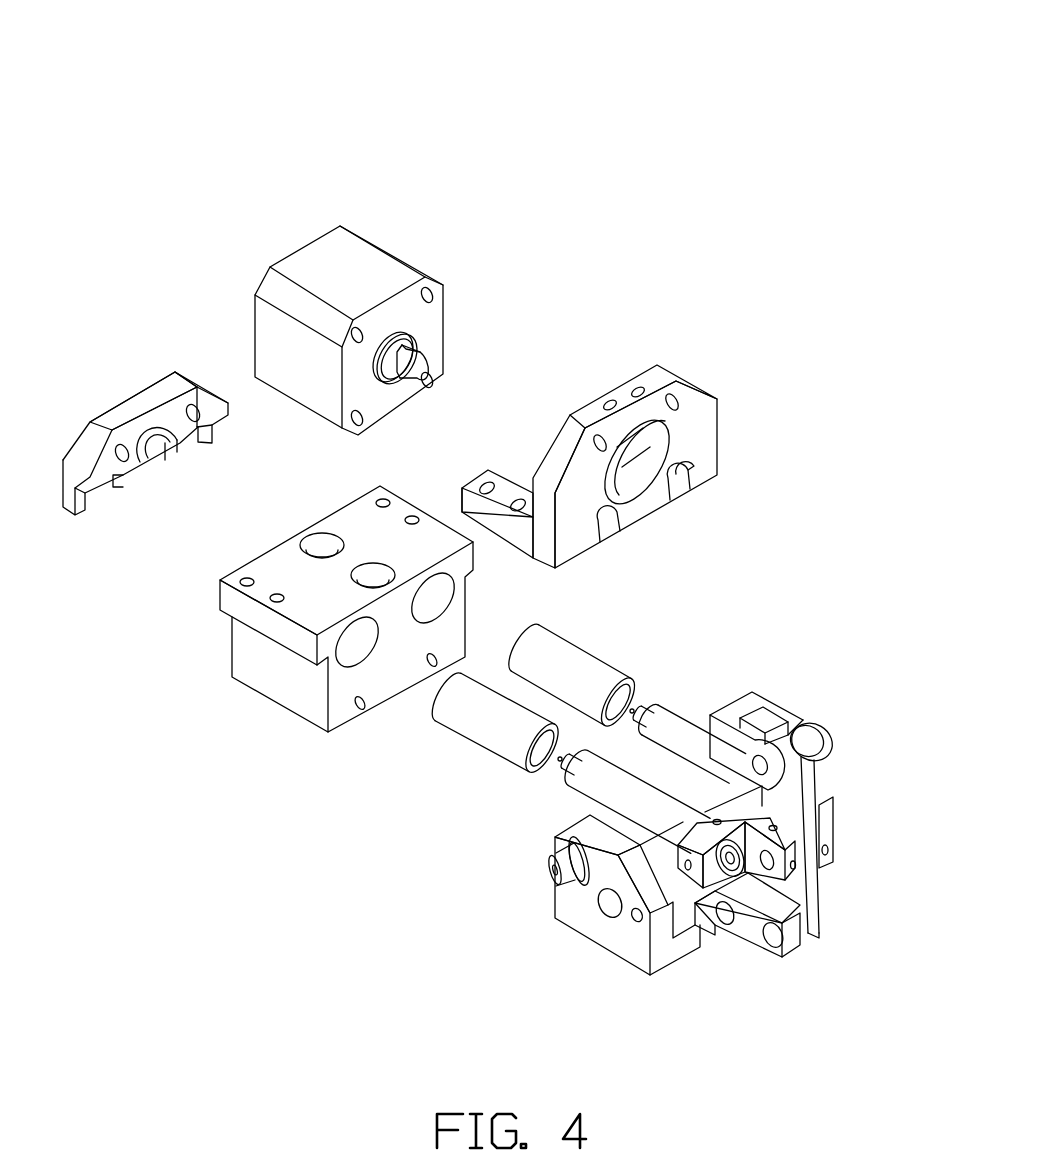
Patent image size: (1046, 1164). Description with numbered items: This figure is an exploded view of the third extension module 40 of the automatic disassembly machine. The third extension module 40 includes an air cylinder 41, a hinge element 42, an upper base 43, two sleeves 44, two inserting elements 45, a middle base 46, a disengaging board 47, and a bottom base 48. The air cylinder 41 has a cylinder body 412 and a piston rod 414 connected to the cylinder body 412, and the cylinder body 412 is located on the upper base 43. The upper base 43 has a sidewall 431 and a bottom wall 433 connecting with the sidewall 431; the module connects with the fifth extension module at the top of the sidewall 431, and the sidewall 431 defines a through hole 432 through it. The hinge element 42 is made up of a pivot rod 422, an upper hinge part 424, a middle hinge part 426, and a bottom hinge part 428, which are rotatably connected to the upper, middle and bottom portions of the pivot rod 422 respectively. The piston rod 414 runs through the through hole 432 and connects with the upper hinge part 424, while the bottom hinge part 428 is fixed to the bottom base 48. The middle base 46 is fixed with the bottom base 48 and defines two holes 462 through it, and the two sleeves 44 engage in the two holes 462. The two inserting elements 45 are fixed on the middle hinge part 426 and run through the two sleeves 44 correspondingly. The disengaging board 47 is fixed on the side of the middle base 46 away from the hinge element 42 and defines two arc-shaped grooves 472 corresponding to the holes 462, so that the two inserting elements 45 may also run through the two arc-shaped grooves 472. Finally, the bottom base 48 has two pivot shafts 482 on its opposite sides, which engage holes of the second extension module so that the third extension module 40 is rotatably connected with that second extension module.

The third extension module 40 is at (586, 54).
The air cylinder 41 is at (300, 208).
The cylinder body 412 is at (363, 257).
The piston rod 414 is at (418, 362).
The disengaging board 47 is at (128, 375).
The arc-shaped grooves 472 is at (101, 500).
The upper base 43 is at (748, 410).
The sidewall 431 is at (585, 483).
The through hole 432 is at (653, 447).
The bottom wall 433 is at (508, 535).
The middle base 46 is at (252, 714).
The holes 462 is at (348, 657).
The sleeves 44 is at (475, 722).
The inserting elements 45 is at (588, 783).
The hinge element 42 is at (905, 702).
The upper hinge part 424 is at (817, 738).
The pivot rod 422 is at (805, 792).
The middle hinge part 426 is at (787, 842).
The bottom hinge part 428 is at (797, 920).
The bottom base 48 is at (583, 965).
The pivot shafts 482 is at (548, 870).